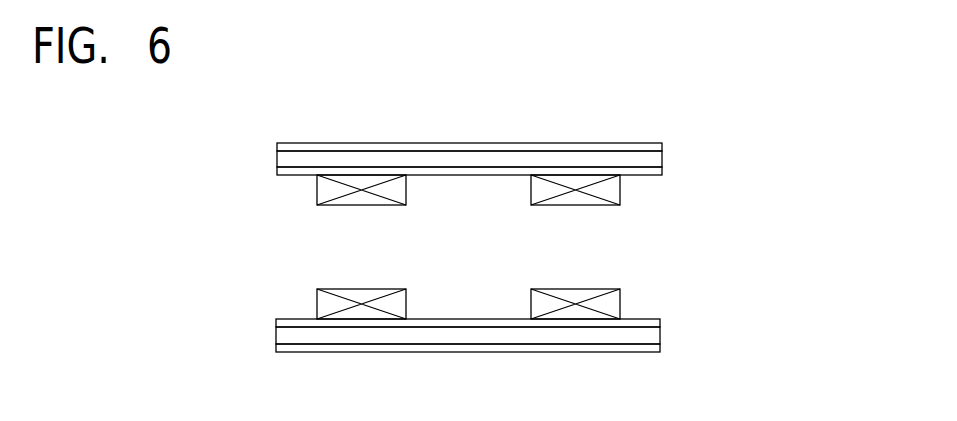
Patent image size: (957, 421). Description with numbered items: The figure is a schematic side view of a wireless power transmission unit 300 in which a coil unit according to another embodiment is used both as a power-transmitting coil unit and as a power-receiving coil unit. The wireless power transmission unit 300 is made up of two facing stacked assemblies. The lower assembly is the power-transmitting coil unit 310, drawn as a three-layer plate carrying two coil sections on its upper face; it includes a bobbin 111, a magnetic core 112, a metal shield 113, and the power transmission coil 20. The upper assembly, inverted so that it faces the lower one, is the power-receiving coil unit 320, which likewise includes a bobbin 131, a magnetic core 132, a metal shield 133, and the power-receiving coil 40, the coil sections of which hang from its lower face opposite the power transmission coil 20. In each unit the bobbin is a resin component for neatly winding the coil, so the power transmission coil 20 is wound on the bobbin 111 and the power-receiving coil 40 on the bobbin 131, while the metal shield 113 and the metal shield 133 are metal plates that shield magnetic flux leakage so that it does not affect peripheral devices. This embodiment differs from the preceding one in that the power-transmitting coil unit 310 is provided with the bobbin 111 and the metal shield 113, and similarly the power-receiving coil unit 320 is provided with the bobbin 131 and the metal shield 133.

The wireless power transmission unit 300 is at (760, 149).
The power-receiving coil unit 320 is at (122, 108).
The metal shield 133 is at (277, 145).
The magnetic core 132 is at (277, 162).
The bobbin 131 is at (277, 173).
The power-receiving coil 40 is at (562, 205).
The power-transmitting coil unit 310 is at (817, 230).
The bobbin 111 is at (660, 319).
The magnetic core 112 is at (660, 335).
The metal shield 113 is at (660, 350).
The power transmission coil 20 is at (385, 289).